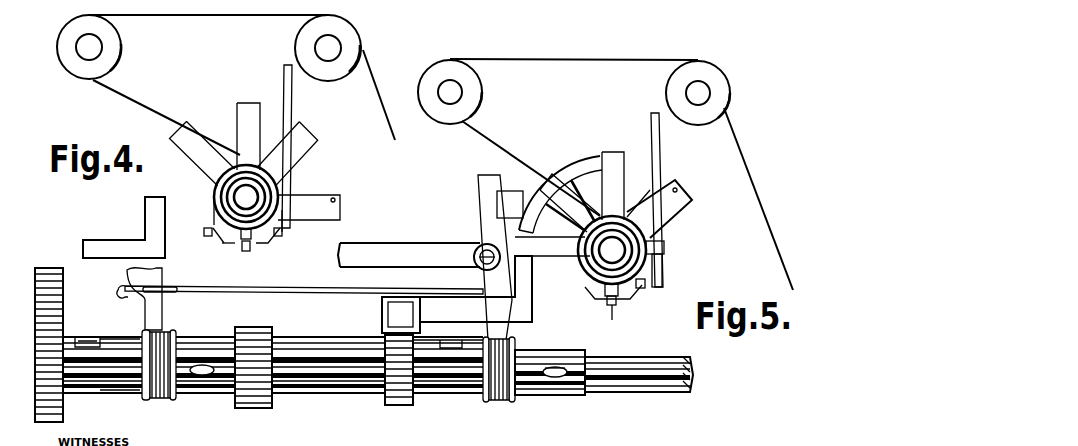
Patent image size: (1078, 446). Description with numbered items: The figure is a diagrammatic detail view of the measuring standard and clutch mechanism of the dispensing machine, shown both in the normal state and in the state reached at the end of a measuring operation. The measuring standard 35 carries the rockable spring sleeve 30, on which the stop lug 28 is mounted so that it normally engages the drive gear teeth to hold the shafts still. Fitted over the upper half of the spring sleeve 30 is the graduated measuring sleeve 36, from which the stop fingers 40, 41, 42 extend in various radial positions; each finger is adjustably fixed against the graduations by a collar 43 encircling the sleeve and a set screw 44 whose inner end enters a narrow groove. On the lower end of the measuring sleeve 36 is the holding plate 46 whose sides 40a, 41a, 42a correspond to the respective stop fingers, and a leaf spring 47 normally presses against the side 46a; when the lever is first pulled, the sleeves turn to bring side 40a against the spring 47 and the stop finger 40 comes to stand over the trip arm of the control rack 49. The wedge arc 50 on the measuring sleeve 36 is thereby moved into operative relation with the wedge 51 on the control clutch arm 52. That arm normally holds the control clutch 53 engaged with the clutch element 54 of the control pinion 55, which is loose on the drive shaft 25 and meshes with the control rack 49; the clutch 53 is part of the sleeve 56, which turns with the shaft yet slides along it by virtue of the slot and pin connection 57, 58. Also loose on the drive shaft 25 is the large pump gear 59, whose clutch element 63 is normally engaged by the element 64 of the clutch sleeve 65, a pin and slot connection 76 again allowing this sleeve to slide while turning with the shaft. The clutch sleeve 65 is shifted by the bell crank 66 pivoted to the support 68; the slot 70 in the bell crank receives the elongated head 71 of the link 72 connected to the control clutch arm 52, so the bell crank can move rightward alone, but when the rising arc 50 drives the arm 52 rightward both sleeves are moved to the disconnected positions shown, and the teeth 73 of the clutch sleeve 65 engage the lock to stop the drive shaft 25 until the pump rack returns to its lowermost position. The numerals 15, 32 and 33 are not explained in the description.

In FIG. 4, the collar 15 is at (150, 396).
In FIG. 5, the drive shaft 25 is at (625, 393).
In FIG. 4, the stop lug 28 is at (338, 215).
In FIG. 5, the stop lug 28 is at (682, 208).
In FIG. 4, the spring sleeve 30 is at (280, 188).
In FIG. 5, the spring sleeve 30 is at (605, 262).
In FIG. 4, the belt 32 is at (126, 93).
In FIG. 5, the belt 32 is at (515, 140).
In FIG. 4, the pulley 33 is at (112, 42).
In FIG. 5, the pulley 33 is at (457, 70).
In FIG. 4, the measuring standard 35 is at (233, 195).
In FIG. 5, the measuring standard 35 is at (596, 258).
In FIG. 4, the measuring sleeve 36 is at (270, 195).
In FIG. 5, the measuring sleeve 36 is at (612, 270).
In FIG. 4, the stop finger 40 is at (186, 148).
In FIG. 5, the stop finger 40 is at (557, 252).
In FIG. 4, the side of holding plate 40a is at (273, 243).
In FIG. 5, the side of holding plate 40a is at (664, 277).
In FIG. 4, the stop finger 41 is at (237, 108).
In FIG. 5, the stop finger 41 is at (556, 182).
In FIG. 4, the side of holding plate 41a is at (246, 250).
In FIG. 5, the side of holding plate 41a is at (635, 300).
In FIG. 4, the stop finger 42 is at (288, 132).
In FIG. 5, the stop finger 42 is at (610, 165).
In FIG. 4, the side of holding plate 42a is at (218, 237).
In FIG. 5, the side of holding plate 42a is at (600, 302).
In FIG. 4, the collar 43 is at (215, 205).
In FIG. 5, the collar 43 is at (620, 297).
In FIG. 4, the set screw 44 is at (206, 232).
In FIG. 5, the set screw 44 is at (643, 290).
In FIG. 4, the holding plate 46 is at (230, 245).
In FIG. 4, the side of holding plate 46a is at (285, 228).
In FIG. 5, the side of holding plate 46a is at (627, 215).
In FIG. 4, the leaf spring 47 is at (285, 78).
In FIG. 5, the leaf spring 47 is at (660, 158).
In FIG. 4, the control rack 49 is at (384, 308).
In FIG. 5, the wedge arc 50 is at (570, 170).
In FIG. 5, the wedge 51 is at (504, 192).
In FIG. 5, the control clutch arm 52 is at (480, 220).
In FIG. 5, the control clutch 53 is at (462, 345).
In FIG. 5, the clutch element 54 is at (413, 397).
In FIG. 5, the control pinion 55 is at (390, 405).
In FIG. 5, the sleeve 56 is at (535, 352).
In FIG. 5, the slot 57 is at (514, 394).
In FIG. 5, the pin 58 is at (553, 394).
In FIG. 4, the pump gear 59 is at (60, 312).
In FIG. 4, the clutch element 63 is at (74, 340).
In FIG. 4, the clutch element 64 is at (116, 345).
In FIG. 4, the clutch sleeve 65 is at (197, 345).
In FIG. 4, the bell crank 66 is at (153, 308).
In FIG. 4, the support 68 is at (97, 241).
In FIG. 5, the support 68 is at (388, 256).
In FIG. 4, the slot 70 is at (120, 285).
In FIG. 4, the elongated head 71 is at (166, 288).
In FIG. 4, the link 72 is at (295, 292).
In FIG. 4, the teeth 73 is at (256, 410).
In FIG. 4, the slot 76 is at (178, 396).